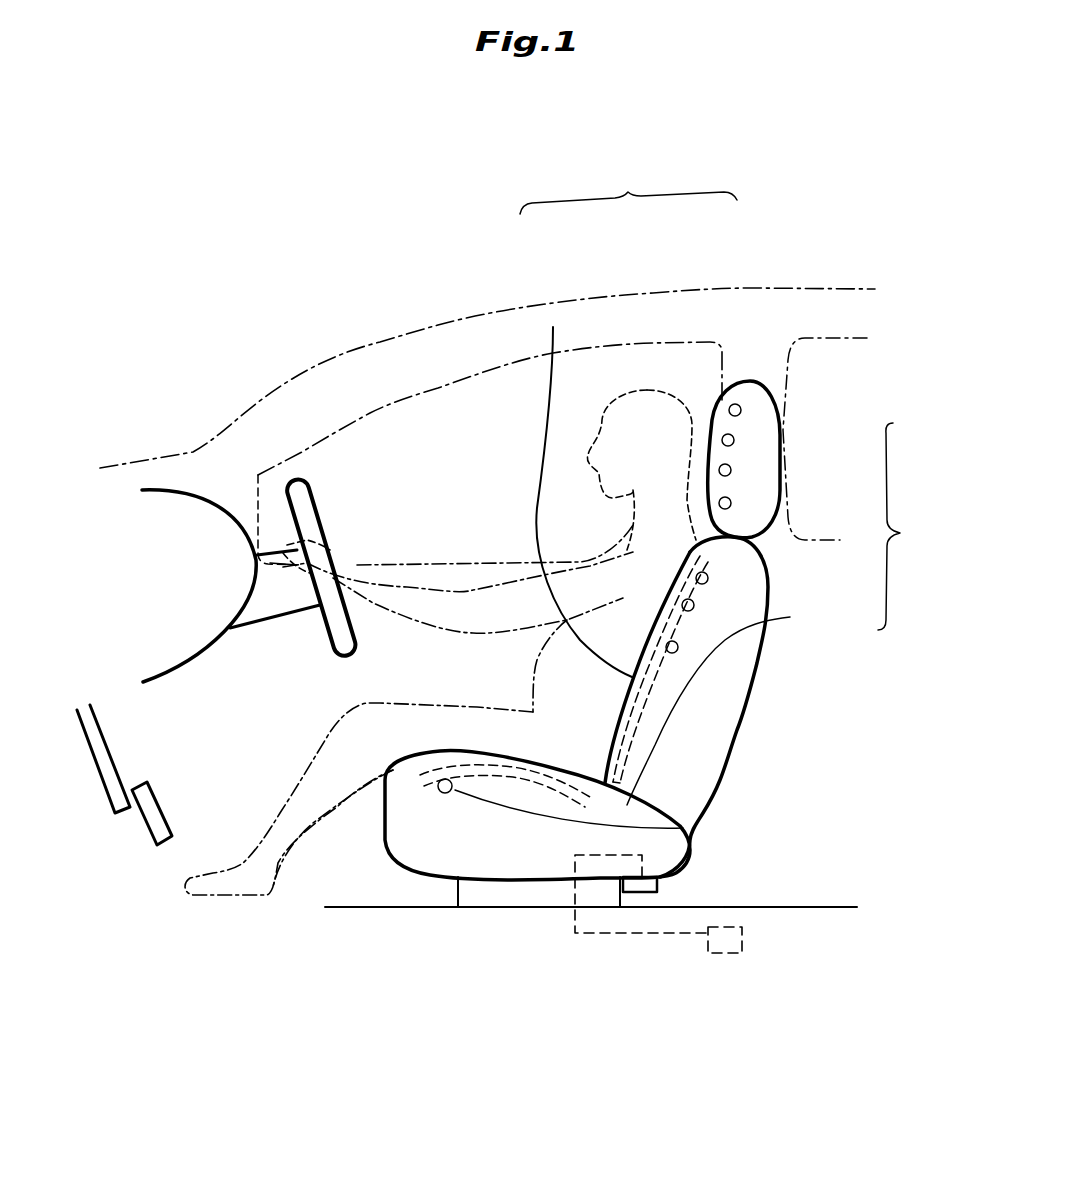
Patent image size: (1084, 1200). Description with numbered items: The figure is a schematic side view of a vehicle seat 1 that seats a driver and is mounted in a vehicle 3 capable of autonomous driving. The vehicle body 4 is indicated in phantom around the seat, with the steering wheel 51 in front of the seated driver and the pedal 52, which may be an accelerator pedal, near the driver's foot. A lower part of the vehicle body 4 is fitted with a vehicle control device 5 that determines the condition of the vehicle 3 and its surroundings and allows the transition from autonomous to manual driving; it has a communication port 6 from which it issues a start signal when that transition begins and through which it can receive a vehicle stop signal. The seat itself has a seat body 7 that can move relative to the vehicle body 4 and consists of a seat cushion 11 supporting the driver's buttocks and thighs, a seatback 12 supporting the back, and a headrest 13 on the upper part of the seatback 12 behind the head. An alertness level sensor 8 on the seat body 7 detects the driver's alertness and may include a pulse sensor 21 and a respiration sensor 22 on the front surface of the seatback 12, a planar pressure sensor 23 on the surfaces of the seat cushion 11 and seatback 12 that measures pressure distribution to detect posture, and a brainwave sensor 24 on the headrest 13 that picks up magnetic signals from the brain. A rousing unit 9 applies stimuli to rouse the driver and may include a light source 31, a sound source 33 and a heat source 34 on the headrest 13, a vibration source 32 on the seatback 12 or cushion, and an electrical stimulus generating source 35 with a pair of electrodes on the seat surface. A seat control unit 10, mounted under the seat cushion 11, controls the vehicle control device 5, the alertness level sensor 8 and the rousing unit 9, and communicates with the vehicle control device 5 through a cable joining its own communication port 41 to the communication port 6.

The vehicle seat 1 is at (603, 630).
The vehicle 3 is at (345, 300).
The vehicle body 4 is at (423, 328).
The vehicle control device 5 is at (742, 942).
The communication port 6 is at (708, 933).
The seat body 7 is at (736, 544).
The alertness level sensor 8 is at (628, 187).
The rousing unit 9 is at (899, 526).
The seat control unit 10 is at (660, 887).
The seat cushion 11 is at (537, 609).
The seatback 12 is at (697, 806).
The headrest 13 is at (792, 375).
The pulse sensor 21 is at (668, 643).
The respiration sensor 22 is at (684, 601).
The pressure sensor 23 is at (483, 763).
The brainwave sensor 24 is at (733, 407).
The light source 31 is at (737, 440).
The vibration source 32 is at (708, 578).
The sound source 33 is at (733, 472).
The heat source 34 is at (735, 505).
The electrical stimulus generating source 35 is at (790, 617).
The communication port 41 is at (646, 880).
The steering wheel 51 is at (306, 515).
The pedal 52 is at (153, 827).